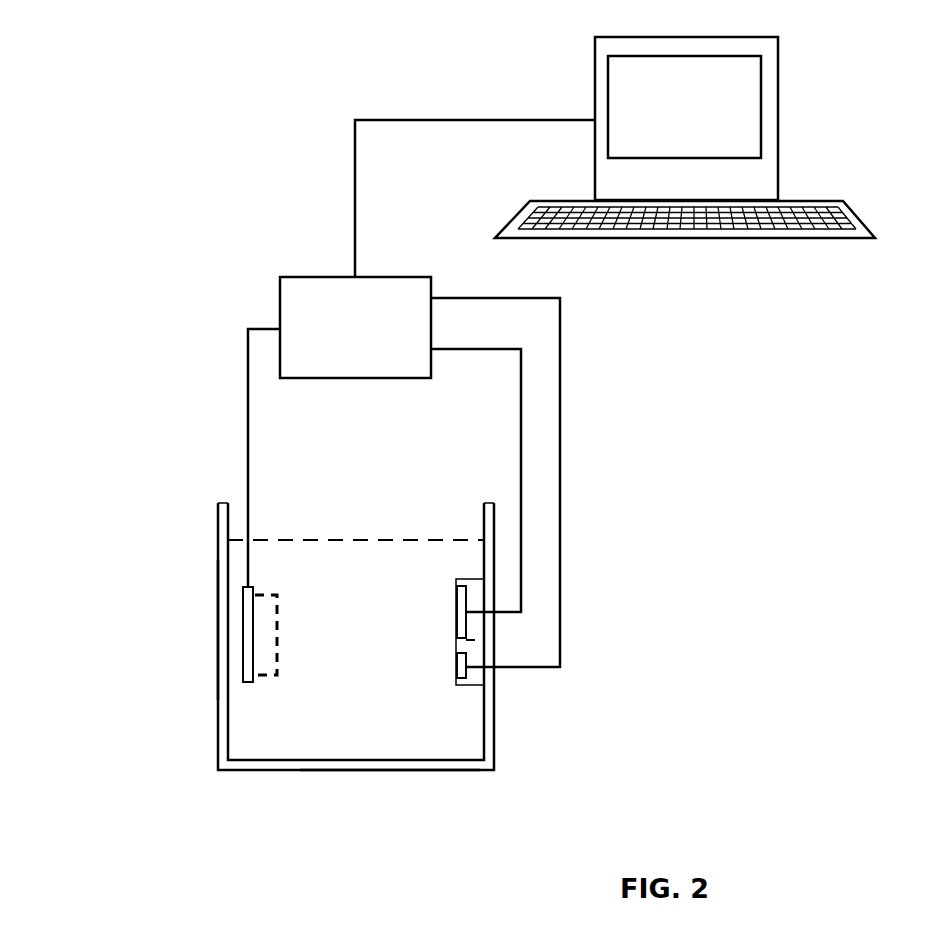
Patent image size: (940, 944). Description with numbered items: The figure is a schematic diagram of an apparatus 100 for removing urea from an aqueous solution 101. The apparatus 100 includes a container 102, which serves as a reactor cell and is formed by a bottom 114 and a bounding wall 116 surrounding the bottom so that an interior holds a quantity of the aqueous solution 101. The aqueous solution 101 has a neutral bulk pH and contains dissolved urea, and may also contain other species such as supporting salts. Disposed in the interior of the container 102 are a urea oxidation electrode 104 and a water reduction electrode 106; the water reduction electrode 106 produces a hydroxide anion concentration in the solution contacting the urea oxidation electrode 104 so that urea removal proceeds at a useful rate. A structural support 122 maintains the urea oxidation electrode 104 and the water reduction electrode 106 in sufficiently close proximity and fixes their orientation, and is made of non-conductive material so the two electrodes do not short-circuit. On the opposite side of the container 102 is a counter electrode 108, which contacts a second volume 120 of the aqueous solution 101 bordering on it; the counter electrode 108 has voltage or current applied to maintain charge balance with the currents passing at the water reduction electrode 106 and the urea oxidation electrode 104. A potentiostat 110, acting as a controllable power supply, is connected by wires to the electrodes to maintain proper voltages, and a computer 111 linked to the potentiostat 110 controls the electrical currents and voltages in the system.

The apparatus 100 is at (296, 155).
The aqueous solution 101 is at (292, 540).
The container 102 is at (198, 570).
The urea oxidation electrode 104 is at (458, 665).
The water reduction electrode 106 is at (457, 605).
The counter electrode 108 is at (247, 635).
The potentiostat 110 is at (297, 300).
The computer 111 is at (778, 124).
The bottom 114 is at (433, 763).
The bounding wall 116 is at (220, 695).
The second volume 120 is at (276, 667).
The structural support 122 is at (475, 641).